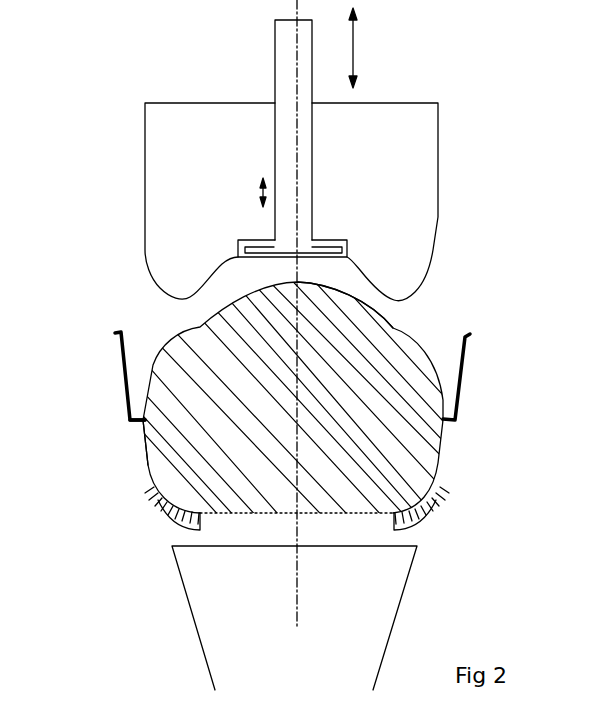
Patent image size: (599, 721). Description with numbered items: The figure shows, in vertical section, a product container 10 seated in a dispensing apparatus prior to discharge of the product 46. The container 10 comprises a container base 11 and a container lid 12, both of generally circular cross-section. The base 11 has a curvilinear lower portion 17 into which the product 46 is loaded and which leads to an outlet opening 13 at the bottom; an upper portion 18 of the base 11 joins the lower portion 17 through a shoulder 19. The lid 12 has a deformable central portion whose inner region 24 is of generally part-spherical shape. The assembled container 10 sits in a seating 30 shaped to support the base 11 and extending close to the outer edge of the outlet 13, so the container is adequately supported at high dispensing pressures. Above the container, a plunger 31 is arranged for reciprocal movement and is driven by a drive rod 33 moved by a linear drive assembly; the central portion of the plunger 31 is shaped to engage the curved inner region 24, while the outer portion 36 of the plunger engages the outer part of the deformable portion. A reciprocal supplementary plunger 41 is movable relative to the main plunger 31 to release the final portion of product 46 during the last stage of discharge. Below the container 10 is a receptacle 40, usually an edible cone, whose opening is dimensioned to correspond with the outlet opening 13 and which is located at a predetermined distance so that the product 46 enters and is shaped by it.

The container 10 is at (490, 452).
The container base 11 is at (123, 458).
The container lid 12 is at (168, 322).
The outlet opening 13 is at (241, 500).
The lower portion 17 is at (155, 465).
The upper portion 18 is at (120, 370).
The shoulder 19 is at (137, 430).
The inner region 24 is at (247, 293).
The seating 30 is at (140, 503).
The plunger 31 is at (446, 223).
The drive rod 33 is at (275, 73).
The outer portion 36 is at (408, 281).
The receptacle 40 is at (385, 612).
The supplementary plunger 41 is at (308, 262).
The product 46 is at (325, 405).